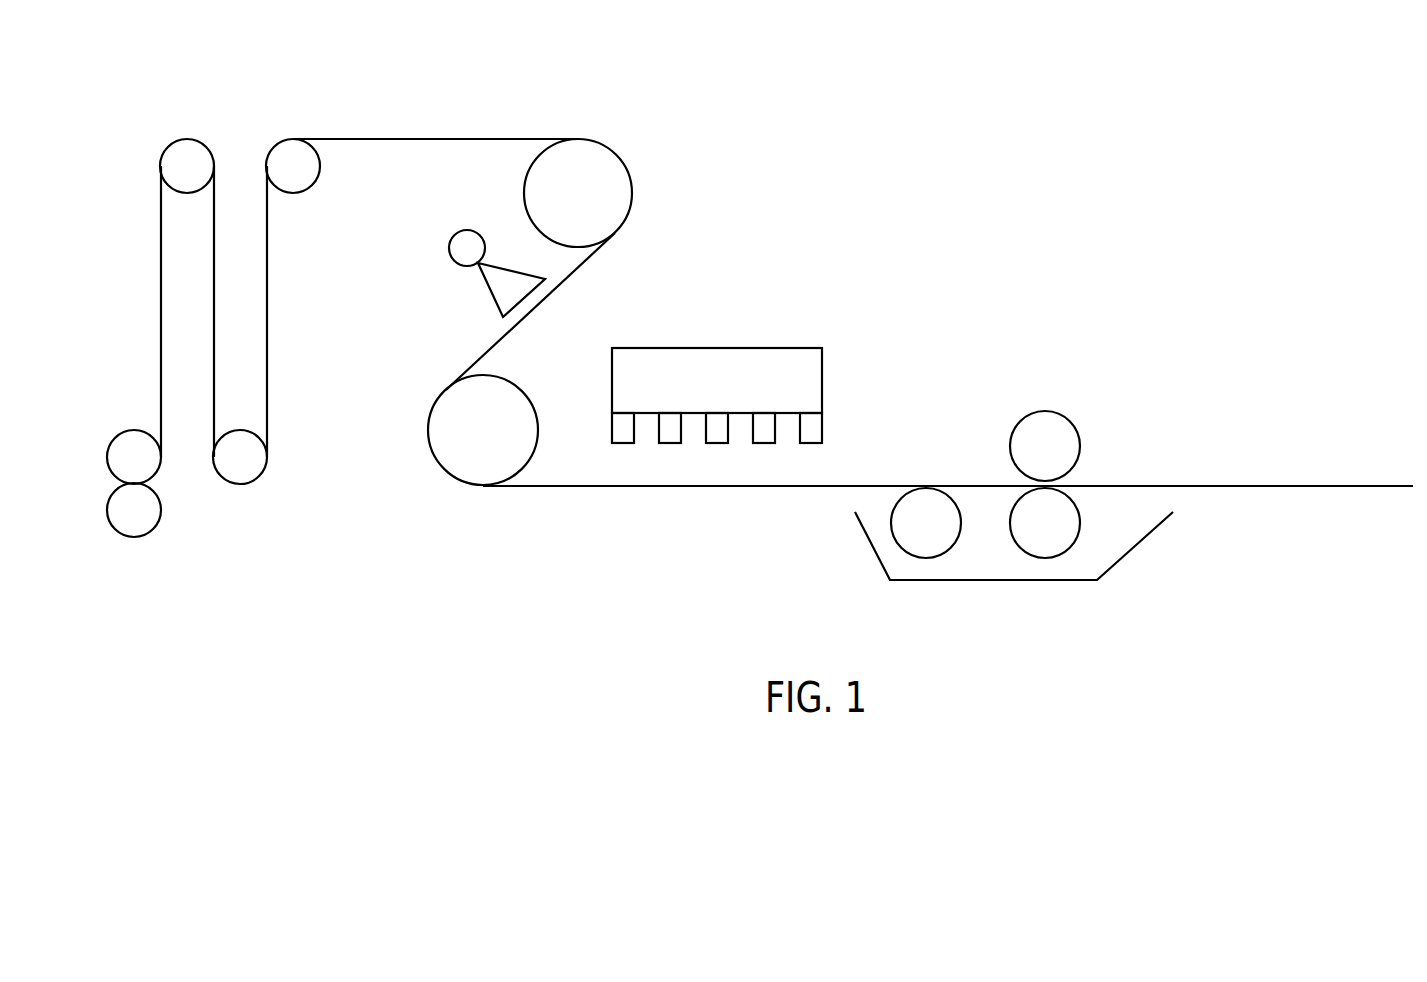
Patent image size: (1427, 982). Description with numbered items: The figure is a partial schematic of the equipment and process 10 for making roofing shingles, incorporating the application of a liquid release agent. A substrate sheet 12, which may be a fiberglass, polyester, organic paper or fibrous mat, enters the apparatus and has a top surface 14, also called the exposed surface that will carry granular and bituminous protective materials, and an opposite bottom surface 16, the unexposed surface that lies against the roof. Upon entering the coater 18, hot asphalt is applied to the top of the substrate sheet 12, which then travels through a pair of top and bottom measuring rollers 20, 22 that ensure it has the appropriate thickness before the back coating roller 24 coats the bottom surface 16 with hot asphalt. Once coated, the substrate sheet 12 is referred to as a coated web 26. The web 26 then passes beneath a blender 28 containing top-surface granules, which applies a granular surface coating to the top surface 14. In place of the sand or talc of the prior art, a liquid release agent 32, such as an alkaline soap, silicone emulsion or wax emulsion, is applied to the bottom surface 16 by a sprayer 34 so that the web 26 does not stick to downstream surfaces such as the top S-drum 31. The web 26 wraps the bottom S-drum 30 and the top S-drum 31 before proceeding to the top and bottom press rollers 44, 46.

The manufacturing equipment and process 10 is at (1201, 176).
The substrate sheet 12 is at (1369, 464).
The top surface 14 is at (1281, 486).
The bottom surface 16 is at (1234, 488).
The coater 18 is at (1092, 585).
The top measuring roller 20 is at (1045, 411).
The bottom measuring roller 22 is at (1045, 558).
The back coating roller 24 is at (925, 558).
The coated web 26 is at (676, 489).
The blender 28 is at (730, 346).
The bottom S-drum 30 is at (527, 392).
The top S-drum 31 is at (632, 191).
The liquid release agent 32 is at (488, 292).
The sprayer 34 is at (446, 237).
The top press roller 44 is at (134, 430).
The bottom press roller 46 is at (136, 537).